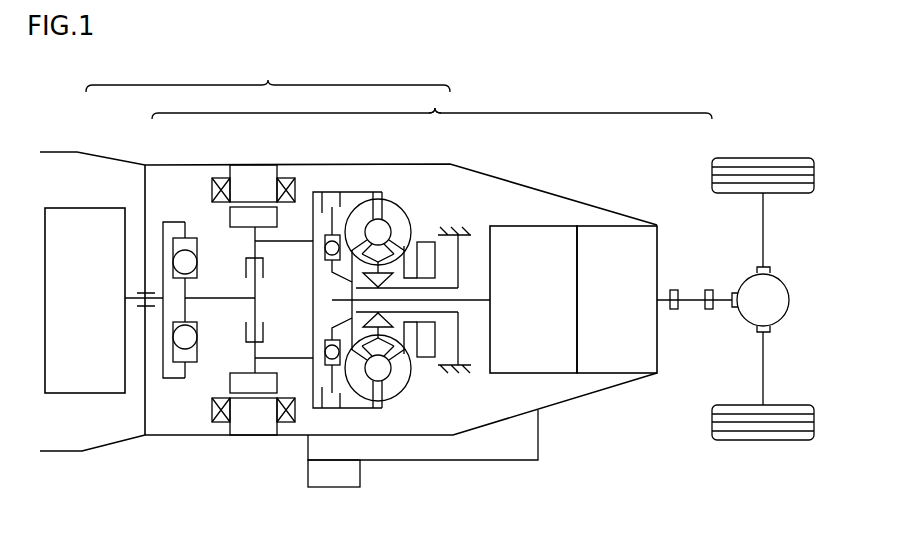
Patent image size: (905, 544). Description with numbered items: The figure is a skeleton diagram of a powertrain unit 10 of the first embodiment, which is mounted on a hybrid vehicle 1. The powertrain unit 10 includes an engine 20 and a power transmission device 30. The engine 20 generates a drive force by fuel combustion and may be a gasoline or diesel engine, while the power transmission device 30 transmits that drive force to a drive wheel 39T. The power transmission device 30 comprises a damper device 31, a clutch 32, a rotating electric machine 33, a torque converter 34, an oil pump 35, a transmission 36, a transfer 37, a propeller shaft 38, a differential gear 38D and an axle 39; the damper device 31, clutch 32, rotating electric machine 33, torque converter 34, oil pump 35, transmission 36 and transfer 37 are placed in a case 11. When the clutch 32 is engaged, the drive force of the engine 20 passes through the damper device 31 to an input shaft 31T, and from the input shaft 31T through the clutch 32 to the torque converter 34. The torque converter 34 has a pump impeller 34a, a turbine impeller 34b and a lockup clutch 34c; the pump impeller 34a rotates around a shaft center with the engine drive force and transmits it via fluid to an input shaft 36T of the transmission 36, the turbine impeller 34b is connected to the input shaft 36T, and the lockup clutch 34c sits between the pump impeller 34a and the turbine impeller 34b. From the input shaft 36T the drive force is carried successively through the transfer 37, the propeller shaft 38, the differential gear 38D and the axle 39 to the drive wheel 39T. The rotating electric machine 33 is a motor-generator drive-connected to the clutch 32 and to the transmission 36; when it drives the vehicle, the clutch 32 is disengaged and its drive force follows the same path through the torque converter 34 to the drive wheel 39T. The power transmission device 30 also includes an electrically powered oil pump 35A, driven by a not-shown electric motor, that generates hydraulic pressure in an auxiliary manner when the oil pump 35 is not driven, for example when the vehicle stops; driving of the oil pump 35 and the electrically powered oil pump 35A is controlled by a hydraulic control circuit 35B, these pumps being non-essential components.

The hybrid vehicle 1 is at (617, 95).
The powertrain unit 10 is at (268, 76).
The case 11 is at (215, 438).
The engine 20 is at (85, 200).
The power transmission device 30 is at (435, 101).
The damper device 31 is at (172, 228).
The input shaft 31T is at (222, 302).
The clutch 32 is at (243, 258).
The rotating electric machine 33 is at (255, 188).
The torque converter 34 is at (396, 200).
The pump impeller 34a is at (397, 388).
The turbine impeller 34b is at (360, 380).
The lockup clutch 34c is at (343, 205).
The oil pump 35 is at (426, 240).
The electrically powered oil pump 35A is at (337, 488).
The hydraulic control circuit 35B is at (428, 461).
The transmission 36 is at (534, 222).
The input shaft 36T is at (475, 295).
The transfer 37 is at (608, 224).
The propeller shaft 38 is at (692, 293).
The differential gear 38D is at (745, 278).
The axle 39 is at (762, 253).
The drive wheel 39T is at (763, 157).